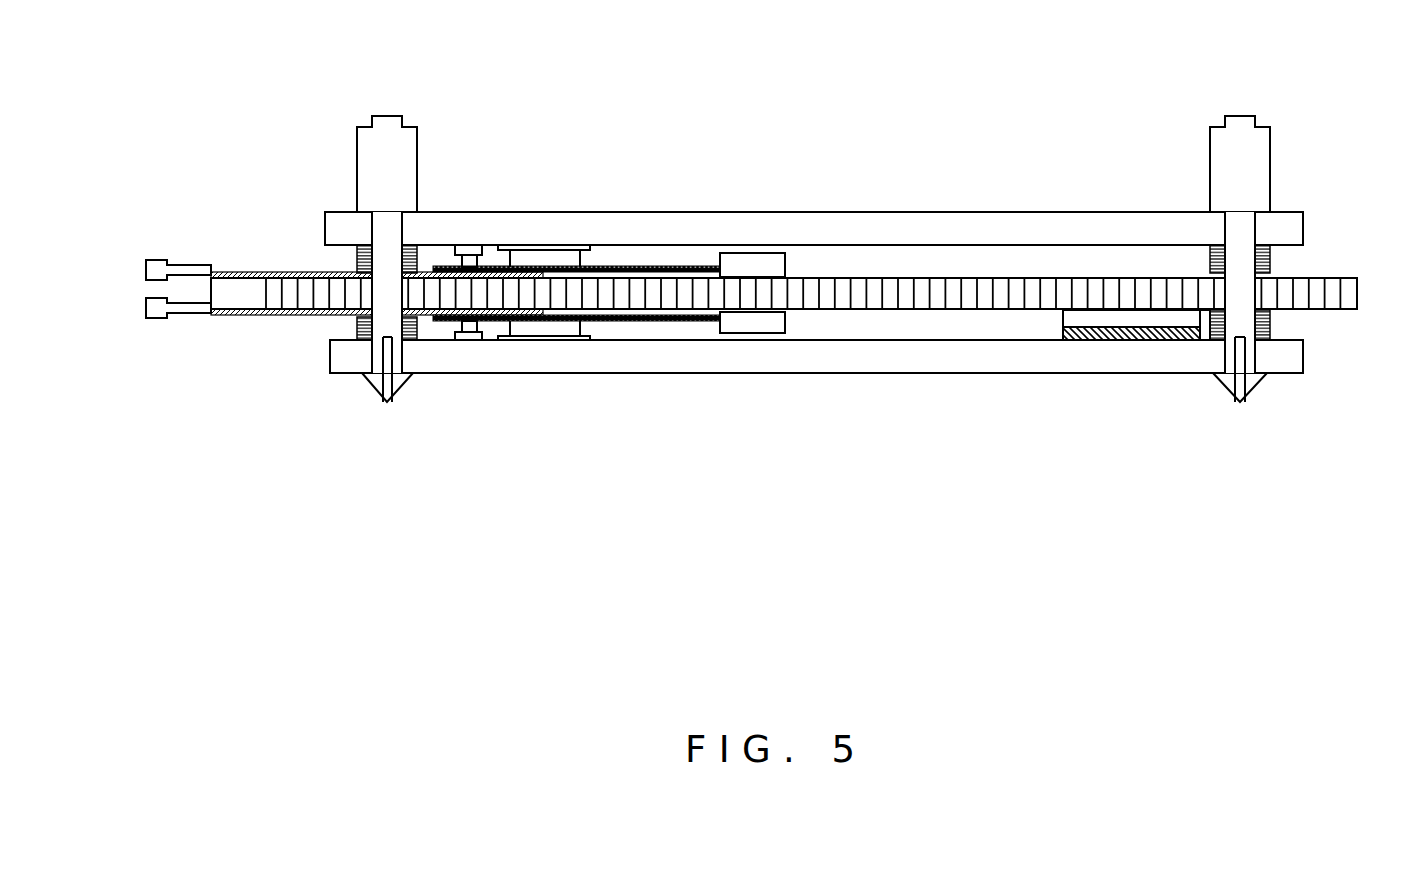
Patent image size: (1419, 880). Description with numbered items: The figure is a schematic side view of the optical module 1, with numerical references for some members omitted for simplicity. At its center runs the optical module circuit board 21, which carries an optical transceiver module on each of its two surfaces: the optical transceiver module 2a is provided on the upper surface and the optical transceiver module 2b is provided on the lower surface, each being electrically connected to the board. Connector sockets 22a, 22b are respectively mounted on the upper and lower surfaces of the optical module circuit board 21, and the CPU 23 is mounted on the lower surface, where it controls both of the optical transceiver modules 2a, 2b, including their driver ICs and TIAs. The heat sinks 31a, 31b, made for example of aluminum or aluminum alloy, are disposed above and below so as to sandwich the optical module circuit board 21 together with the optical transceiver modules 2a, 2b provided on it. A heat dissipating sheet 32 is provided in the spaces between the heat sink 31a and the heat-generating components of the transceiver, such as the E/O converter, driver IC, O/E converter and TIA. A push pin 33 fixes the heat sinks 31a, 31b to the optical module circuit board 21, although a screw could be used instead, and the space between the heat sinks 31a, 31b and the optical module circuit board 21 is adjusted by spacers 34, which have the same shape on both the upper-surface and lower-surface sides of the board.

The optical module 1 is at (196, 147).
The optical transceiver module 2a is at (278, 248).
The optical transceiver module 2b is at (290, 363).
The optical module circuit board 21 is at (1357, 295).
The connector socket 22a is at (785, 262).
The connector socket 22b is at (785, 325).
The CPU 23 is at (1063, 317).
The heat sink 31a is at (758, 212).
The heat sink 31b is at (795, 373).
The heat dissipating sheet 32 is at (1063, 329).
The push pin 33 is at (417, 133).
The spacer 34 is at (357, 253).